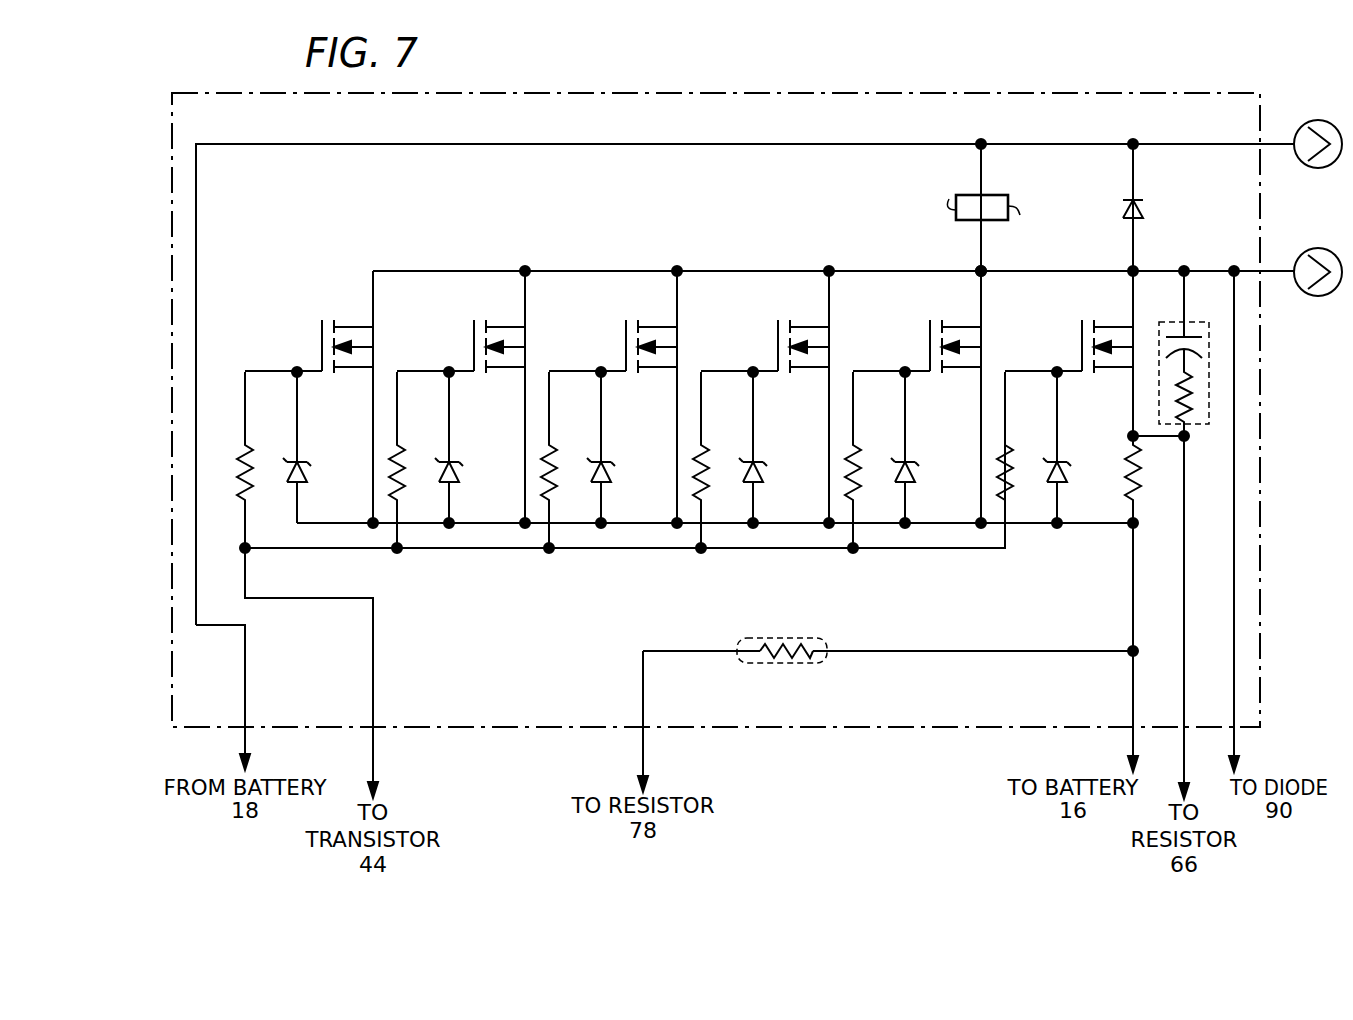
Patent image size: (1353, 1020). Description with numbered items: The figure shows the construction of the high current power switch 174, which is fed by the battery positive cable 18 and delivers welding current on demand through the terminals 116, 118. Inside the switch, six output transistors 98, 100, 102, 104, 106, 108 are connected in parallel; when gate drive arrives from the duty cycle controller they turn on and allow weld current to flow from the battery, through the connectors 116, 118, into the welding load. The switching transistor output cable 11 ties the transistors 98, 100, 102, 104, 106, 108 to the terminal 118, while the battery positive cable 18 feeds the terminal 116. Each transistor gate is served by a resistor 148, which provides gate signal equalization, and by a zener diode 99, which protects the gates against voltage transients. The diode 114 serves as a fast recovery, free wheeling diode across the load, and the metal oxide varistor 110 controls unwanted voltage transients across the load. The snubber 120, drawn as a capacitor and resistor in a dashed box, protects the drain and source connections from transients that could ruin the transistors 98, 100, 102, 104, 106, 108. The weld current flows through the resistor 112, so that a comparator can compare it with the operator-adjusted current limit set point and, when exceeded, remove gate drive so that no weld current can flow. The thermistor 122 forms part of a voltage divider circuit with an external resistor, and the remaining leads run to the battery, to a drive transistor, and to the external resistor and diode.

The power switch 174 is at (826, 93).
The battery positive cable 18 is at (196, 272).
The switching transistor output cable 11 is at (593, 268).
The transistor 98 is at (311, 399).
The transistor 100 is at (459, 409).
The transistor 102 is at (611, 409).
The transistor 104 is at (763, 409).
The transistor 106 is at (915, 409).
The transistor 108 is at (1067, 407).
The zener diode 99 is at (302, 462).
The resistor 148 is at (240, 462).
The metal oxide varistor 110 is at (962, 221).
The resistor 112 is at (1125, 487).
The diode 114 is at (1144, 210).
The terminal 116 is at (1302, 124).
The terminal 118 is at (1301, 296).
The snubber 120 is at (1210, 346).
The thermistor 122 is at (822, 638).